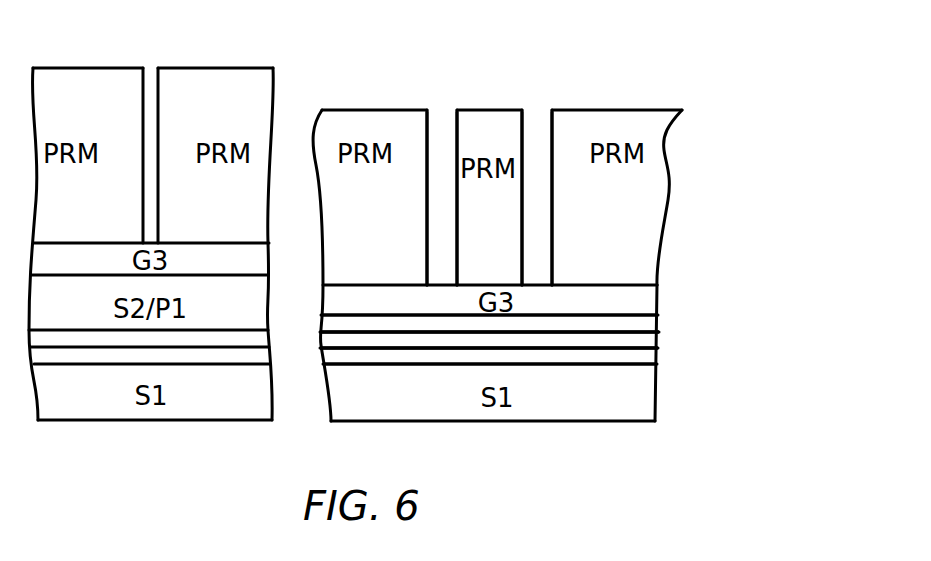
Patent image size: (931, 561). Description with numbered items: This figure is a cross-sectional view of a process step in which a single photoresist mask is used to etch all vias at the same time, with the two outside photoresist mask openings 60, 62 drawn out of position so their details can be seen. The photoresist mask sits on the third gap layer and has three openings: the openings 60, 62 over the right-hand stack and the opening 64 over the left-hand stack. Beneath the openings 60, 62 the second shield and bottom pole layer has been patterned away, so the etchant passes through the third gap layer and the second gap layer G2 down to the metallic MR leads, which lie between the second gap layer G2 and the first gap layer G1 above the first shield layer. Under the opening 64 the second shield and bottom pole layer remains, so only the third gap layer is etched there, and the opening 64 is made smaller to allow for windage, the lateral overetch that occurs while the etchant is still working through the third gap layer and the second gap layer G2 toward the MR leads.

The photoresist mask opening 60 is at (535, 148).
The photoresist mask opening 62 is at (443, 148).
The photoresist mask opening 64 is at (151, 88).
The first gap layer G1 is at (661, 356).
The second gap layer G2 is at (661, 321).
The MR leads MR is at (661, 338).